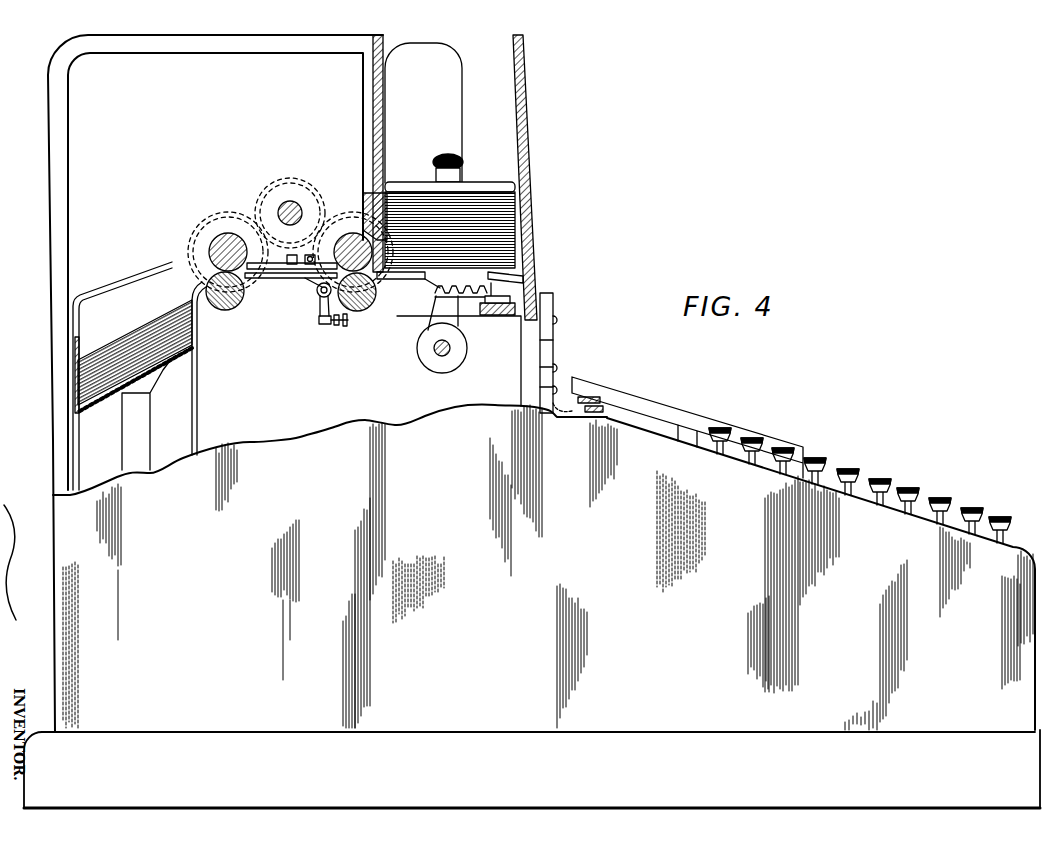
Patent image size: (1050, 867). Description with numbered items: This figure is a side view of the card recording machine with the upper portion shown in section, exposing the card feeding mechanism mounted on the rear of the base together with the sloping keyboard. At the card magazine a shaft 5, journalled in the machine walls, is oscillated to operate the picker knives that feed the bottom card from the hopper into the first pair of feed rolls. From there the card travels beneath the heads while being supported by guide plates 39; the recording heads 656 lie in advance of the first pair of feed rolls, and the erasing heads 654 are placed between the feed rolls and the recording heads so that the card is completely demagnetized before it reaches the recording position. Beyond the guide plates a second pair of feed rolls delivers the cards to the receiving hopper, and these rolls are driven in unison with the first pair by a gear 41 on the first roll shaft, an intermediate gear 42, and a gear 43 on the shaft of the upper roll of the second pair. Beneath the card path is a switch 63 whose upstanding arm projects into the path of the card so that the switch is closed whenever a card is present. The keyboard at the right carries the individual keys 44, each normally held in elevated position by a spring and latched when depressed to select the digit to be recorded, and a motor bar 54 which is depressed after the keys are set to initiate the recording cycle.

The shaft 5 is at (433, 351).
The guide plates 39 is at (267, 268).
The gear 41 is at (350, 227).
The intermediate gear 42 is at (281, 190).
The gear 43 is at (206, 224).
The key 44 is at (850, 468).
The motor bar 54 is at (637, 396).
The switch 63 is at (322, 323).
The erasing heads 654 is at (307, 272).
The recording heads 656 is at (270, 279).